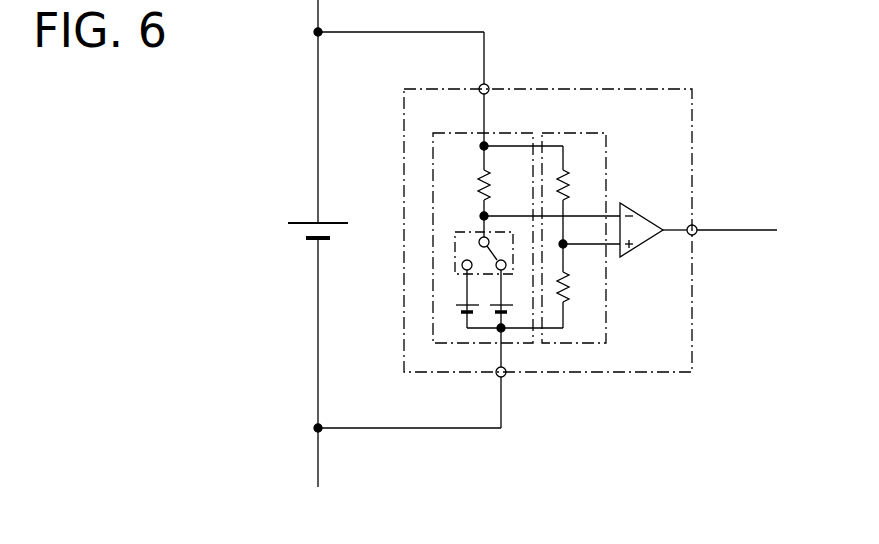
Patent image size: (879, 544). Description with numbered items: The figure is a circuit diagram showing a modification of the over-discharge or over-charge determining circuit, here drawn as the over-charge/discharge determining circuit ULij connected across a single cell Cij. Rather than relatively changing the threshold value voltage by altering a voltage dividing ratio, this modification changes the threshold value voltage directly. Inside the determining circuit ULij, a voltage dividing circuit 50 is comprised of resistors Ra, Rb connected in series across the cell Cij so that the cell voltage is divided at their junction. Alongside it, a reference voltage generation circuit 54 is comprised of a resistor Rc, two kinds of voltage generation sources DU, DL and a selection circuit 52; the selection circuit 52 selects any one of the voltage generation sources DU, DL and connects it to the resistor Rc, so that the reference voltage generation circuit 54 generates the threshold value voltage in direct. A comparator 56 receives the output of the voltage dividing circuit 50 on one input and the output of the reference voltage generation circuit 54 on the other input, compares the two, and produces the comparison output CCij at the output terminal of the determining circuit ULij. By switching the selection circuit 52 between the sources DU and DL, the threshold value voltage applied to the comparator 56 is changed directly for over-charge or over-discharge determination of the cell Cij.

The voltage dividing circuit 50 is at (587, 132).
The selection circuit 52 is at (464, 232).
The reference voltage generation circuit 54 is at (455, 133).
The comparator 56 is at (646, 206).
The cell Cij is at (314, 243).
The over-charge/discharge determining circuit ULij is at (678, 88).
The comparison output CCij is at (752, 257).
The resistor Ra is at (568, 176).
The resistor Rb is at (556, 295).
The resistor Rc is at (480, 174).
The voltage generation source DU is at (456, 305).
The voltage generation source DL is at (513, 305).